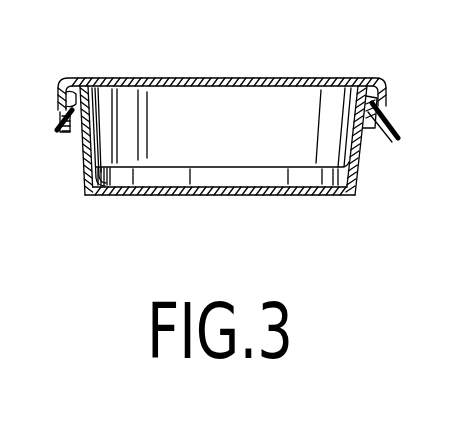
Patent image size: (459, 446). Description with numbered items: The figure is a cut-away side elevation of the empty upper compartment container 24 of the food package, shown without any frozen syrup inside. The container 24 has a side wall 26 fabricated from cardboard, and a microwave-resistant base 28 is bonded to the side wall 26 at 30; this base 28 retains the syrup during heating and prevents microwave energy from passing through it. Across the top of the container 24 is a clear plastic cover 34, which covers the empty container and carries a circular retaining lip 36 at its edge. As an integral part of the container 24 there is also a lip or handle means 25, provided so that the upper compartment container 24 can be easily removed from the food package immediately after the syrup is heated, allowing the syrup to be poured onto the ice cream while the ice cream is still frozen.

The upper compartment container 24 is at (225, 140).
The lip or handle means 25 is at (397, 143).
The side wall 26 is at (293, 104).
The microwave-resistant base 28 is at (175, 190).
The bond 30 is at (345, 163).
The clear plastic cover 34 is at (213, 80).
The circular retaining lip 36 is at (58, 88).